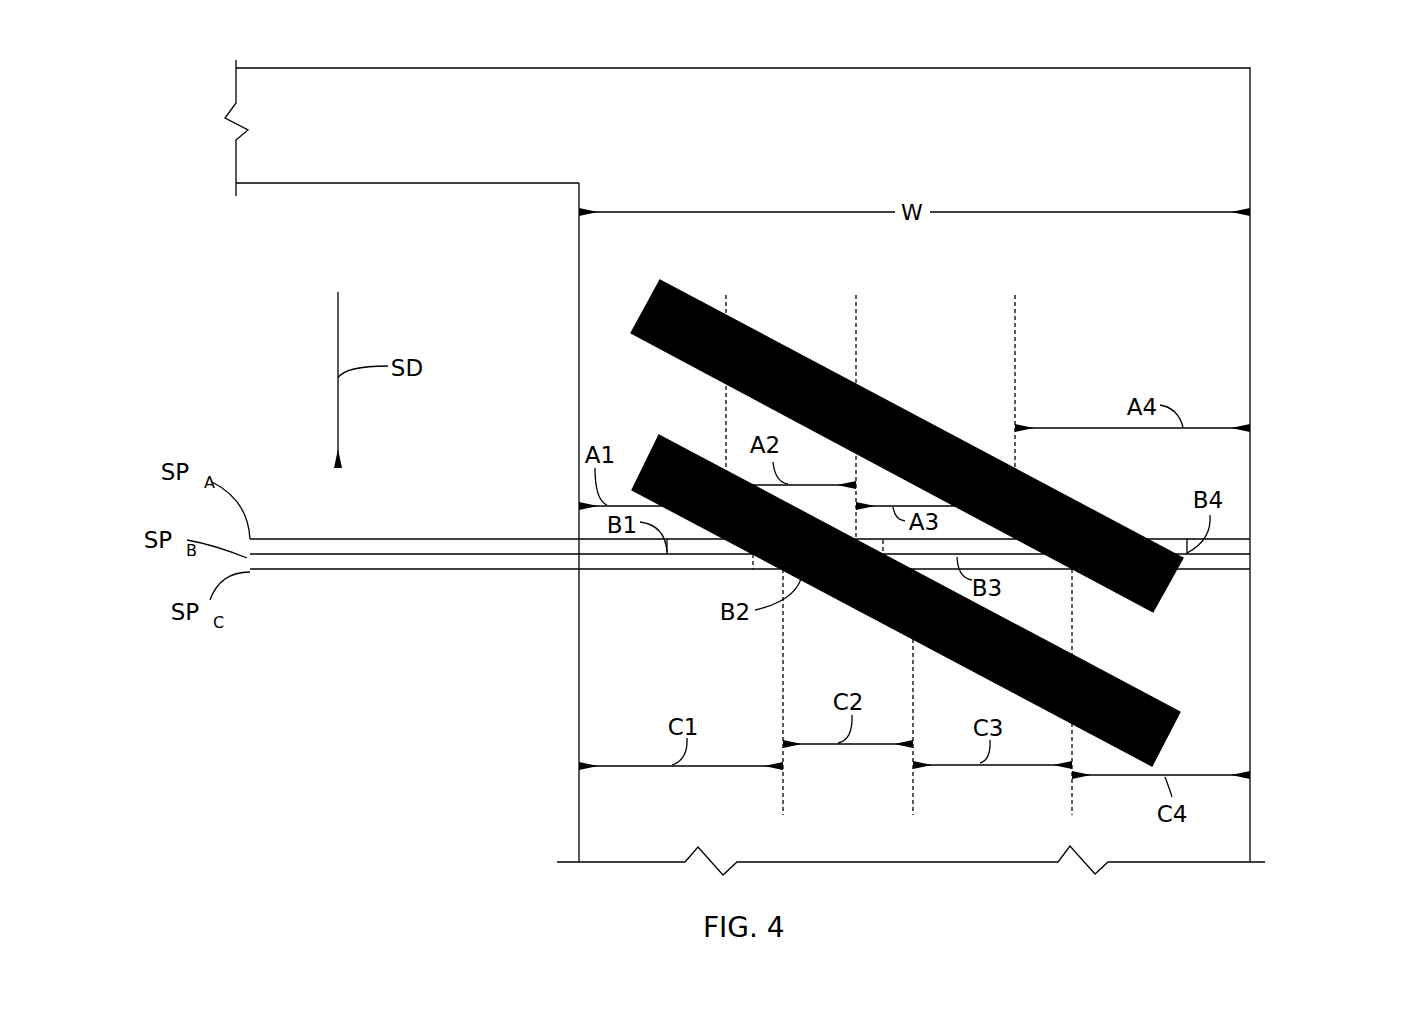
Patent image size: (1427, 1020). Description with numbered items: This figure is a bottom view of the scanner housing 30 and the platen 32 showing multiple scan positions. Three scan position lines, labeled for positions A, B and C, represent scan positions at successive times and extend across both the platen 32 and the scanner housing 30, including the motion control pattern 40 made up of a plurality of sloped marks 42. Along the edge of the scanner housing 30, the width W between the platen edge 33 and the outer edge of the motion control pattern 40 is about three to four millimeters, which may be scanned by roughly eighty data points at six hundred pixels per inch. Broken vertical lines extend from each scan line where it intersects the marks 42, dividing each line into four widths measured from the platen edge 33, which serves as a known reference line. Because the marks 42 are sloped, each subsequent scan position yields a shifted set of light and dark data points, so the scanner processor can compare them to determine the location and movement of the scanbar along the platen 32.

The scanner housing 30 is at (778, 467).
The platen 32 is at (272, 338).
The platen edge 33 is at (578, 623).
The motion control pattern 40 is at (976, 523).
The marks 42 is at (1092, 512).